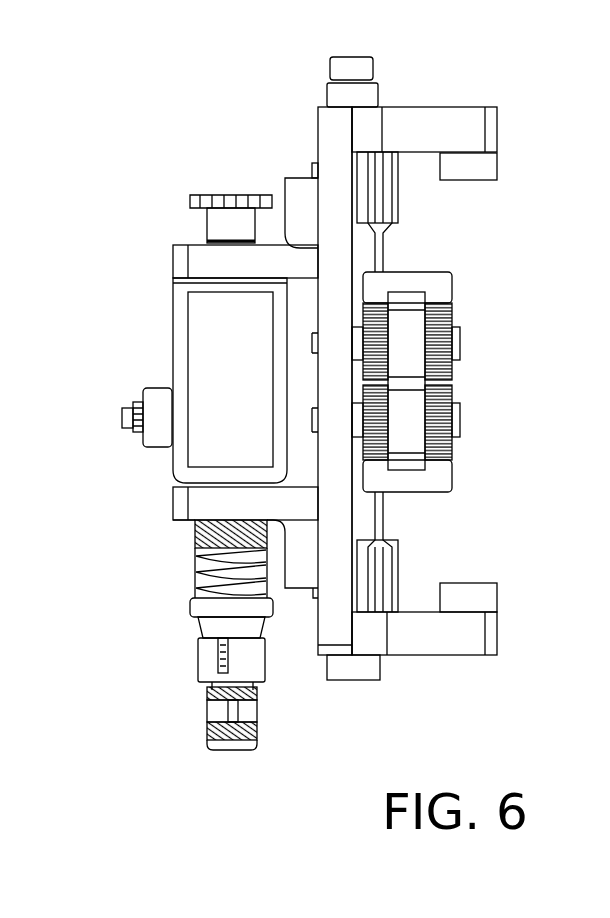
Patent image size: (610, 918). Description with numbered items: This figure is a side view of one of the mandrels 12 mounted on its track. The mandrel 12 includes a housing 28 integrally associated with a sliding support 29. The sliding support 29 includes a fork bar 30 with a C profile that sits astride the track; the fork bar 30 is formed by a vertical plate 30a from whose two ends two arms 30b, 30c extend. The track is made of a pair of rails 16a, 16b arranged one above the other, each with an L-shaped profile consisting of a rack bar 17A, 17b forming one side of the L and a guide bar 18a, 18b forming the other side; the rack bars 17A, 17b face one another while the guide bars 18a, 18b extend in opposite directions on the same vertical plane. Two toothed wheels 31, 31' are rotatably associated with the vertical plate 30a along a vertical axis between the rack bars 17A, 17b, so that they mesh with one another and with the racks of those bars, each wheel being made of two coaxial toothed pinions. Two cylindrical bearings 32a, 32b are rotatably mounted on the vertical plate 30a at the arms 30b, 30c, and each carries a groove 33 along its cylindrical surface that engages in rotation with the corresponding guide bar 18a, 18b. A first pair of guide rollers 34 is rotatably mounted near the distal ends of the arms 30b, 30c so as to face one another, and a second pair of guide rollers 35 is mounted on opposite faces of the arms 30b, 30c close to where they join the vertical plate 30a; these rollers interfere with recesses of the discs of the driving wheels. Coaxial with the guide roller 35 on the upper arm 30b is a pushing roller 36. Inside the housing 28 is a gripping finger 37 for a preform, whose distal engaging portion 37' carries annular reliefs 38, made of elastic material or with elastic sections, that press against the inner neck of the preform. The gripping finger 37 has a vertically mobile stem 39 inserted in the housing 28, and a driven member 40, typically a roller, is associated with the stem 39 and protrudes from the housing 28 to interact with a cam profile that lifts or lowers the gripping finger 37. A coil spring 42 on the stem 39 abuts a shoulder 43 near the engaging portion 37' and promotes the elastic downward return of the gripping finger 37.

The mandrel 12 is at (155, 362).
The rail 16a is at (464, 477).
The rail 16b is at (460, 273).
The rack bar 17A is at (425, 483).
The rack bar 17b is at (420, 280).
The guide bar 18a is at (383, 521).
The guide bar 18b is at (300, 245).
The housing 28 is at (203, 310).
The sliding support 29 is at (414, 97).
The fork bar 30 is at (316, 148).
The vertical plate 30a is at (320, 128).
The arm 30b is at (470, 118).
The arm 30c is at (465, 635).
The toothed wheel 31 is at (461, 341).
The toothed wheel 31' is at (464, 422).
The cylindrical bearing 32a is at (372, 612).
The cylindrical bearing 32b is at (363, 192).
The groove 33 is at (383, 198).
The guide roller 34 is at (482, 162).
The guide roller 35 is at (338, 97).
The pushing roller 36 is at (363, 68).
The gripping finger 37 is at (179, 671).
The engaging portion 37' is at (141, 730).
The annular relief 38 is at (257, 700).
The stem 39 is at (200, 562).
The driven member 40 is at (152, 432).
The coil spring 42 is at (200, 587).
The shoulder 43 is at (193, 607).